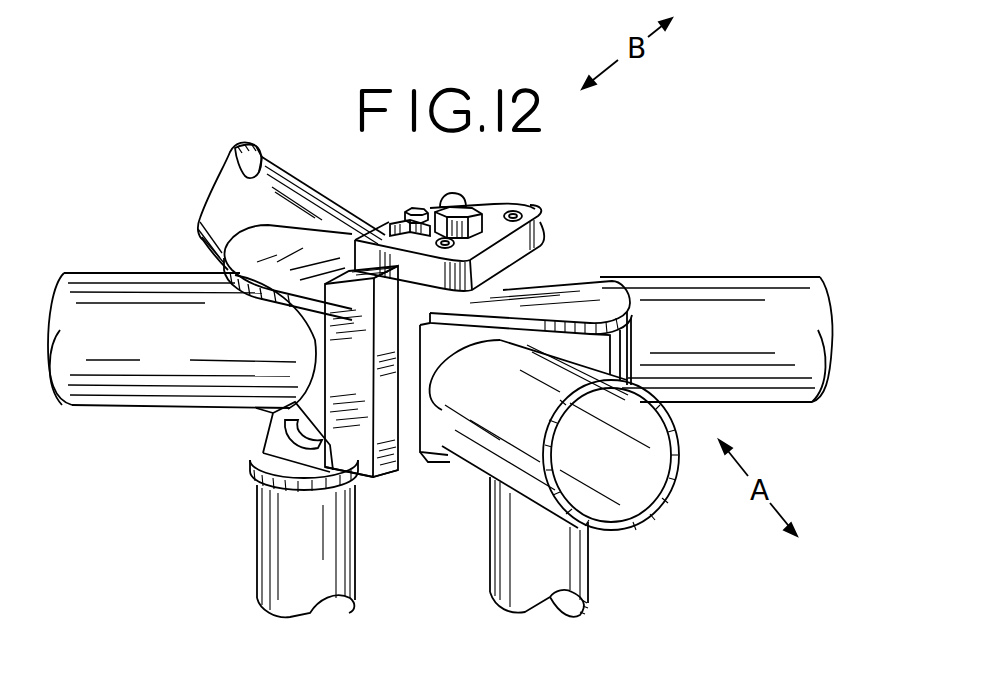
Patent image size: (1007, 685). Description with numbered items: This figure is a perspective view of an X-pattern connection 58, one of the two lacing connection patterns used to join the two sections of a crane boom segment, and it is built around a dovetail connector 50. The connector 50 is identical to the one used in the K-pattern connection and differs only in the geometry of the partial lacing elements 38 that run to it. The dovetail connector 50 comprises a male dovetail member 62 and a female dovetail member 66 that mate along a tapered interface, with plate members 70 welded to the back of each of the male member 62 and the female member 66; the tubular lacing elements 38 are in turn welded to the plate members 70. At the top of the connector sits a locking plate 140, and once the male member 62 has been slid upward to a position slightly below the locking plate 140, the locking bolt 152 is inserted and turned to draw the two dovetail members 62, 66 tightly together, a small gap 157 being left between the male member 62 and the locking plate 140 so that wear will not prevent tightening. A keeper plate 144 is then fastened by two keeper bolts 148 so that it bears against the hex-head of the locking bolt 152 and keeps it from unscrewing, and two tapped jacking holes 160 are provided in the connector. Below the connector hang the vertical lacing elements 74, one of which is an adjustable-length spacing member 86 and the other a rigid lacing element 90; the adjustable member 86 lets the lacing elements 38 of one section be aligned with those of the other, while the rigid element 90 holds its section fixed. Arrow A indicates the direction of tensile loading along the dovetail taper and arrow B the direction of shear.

The partial lacing element 38 is at (296, 175).
The dovetail connector 50 is at (589, 241).
The X-pattern connection 58 is at (418, 468).
The male dovetail member 62 is at (392, 482).
The female dovetail member 66 is at (365, 470).
The plate member 70 is at (222, 268).
The vertical lacing element 74 is at (256, 533).
The adjustable-length spacing member 86 is at (276, 604).
The rigid lacing element 90 is at (582, 582).
The locking plate 140 is at (528, 215).
The keeper plate 144 is at (438, 200).
The keeper bolt 148 is at (413, 208).
The locking bolt 152 is at (468, 210).
The gap 157 is at (378, 298).
The tapped jacking hole 160 is at (516, 210).